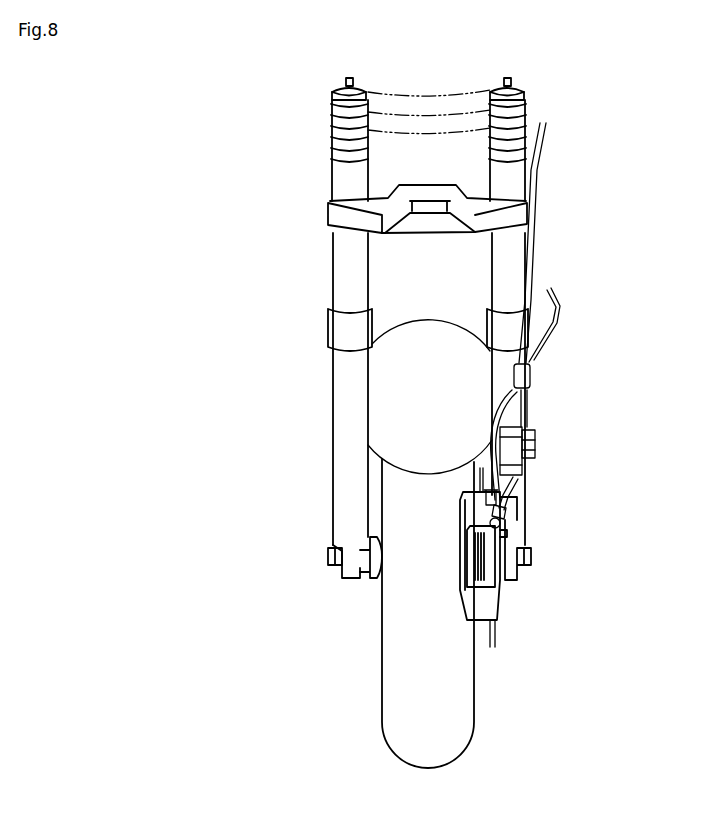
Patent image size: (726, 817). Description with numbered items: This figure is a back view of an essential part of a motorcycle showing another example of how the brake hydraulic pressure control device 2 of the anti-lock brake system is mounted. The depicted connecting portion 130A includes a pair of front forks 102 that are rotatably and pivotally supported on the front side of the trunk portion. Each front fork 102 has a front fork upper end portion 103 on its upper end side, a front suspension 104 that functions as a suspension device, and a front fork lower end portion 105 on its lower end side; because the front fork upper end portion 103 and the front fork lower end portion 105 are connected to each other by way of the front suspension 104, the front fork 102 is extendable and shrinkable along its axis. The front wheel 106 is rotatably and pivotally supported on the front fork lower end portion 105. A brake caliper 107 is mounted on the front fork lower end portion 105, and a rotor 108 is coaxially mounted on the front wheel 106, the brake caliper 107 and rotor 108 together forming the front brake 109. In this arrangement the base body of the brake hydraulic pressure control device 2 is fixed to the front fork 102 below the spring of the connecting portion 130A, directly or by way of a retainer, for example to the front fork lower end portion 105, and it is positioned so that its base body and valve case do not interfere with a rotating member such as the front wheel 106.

The connecting portion 130A is at (512, 329).
The front fork upper end portion 103 is at (513, 251).
The front fork 102 is at (566, 290).
The front suspension 104 is at (540, 346).
The front fork lower end portion 105 is at (523, 412).
The brake hydraulic pressure control device 2 is at (532, 455).
The brake caliper 107 is at (503, 598).
The rotor 108 is at (485, 635).
The front brake 109 is at (576, 537).
The front wheel 106 is at (486, 710).